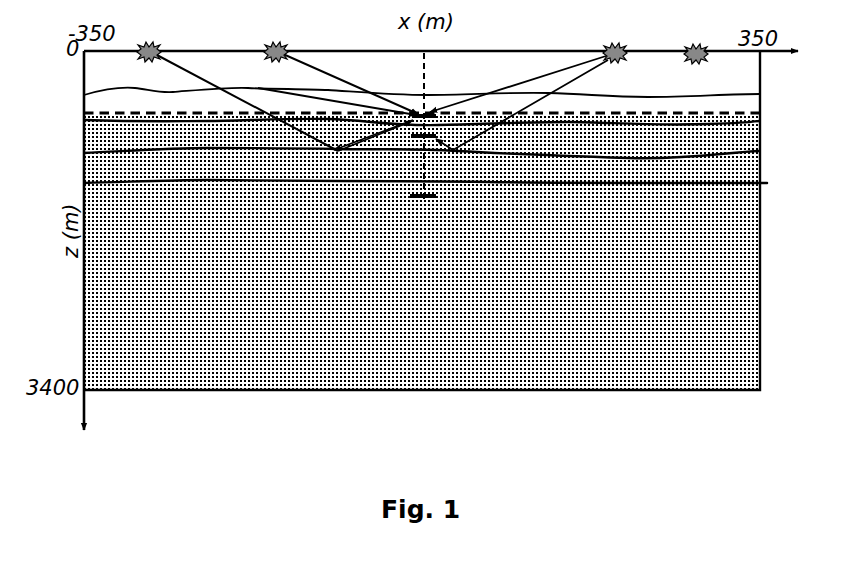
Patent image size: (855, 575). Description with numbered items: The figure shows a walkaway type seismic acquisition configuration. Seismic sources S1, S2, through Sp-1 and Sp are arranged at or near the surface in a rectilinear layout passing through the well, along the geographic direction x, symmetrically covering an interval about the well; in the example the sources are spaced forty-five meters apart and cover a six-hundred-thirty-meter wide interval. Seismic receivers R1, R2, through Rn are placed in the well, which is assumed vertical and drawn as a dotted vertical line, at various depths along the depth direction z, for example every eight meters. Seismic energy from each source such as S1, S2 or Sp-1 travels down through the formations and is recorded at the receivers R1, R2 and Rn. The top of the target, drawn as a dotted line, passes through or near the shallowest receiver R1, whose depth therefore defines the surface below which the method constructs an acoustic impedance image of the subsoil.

The seismic source S1 is at (169, 36).
The seismic source S2 is at (293, 36).
The seismic source Sp-1 is at (586, 36).
The seismic source Sp is at (676, 37).
The seismic receiver R1 is at (413, 94).
The seismic receiver R2 is at (413, 155).
The seismic receiver Rn is at (413, 204).